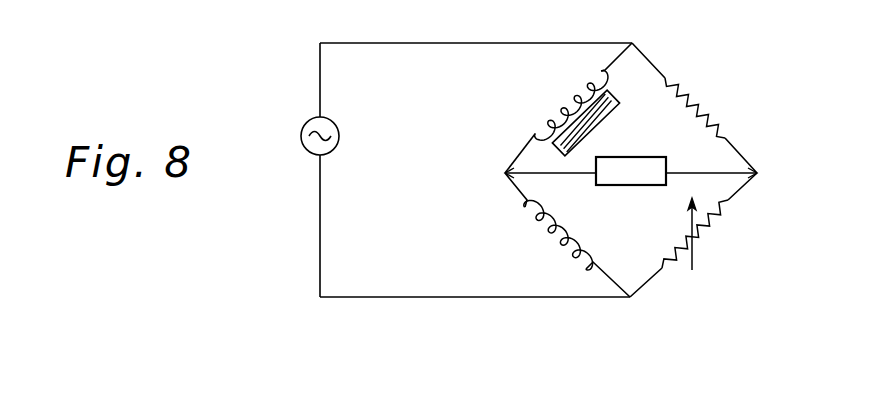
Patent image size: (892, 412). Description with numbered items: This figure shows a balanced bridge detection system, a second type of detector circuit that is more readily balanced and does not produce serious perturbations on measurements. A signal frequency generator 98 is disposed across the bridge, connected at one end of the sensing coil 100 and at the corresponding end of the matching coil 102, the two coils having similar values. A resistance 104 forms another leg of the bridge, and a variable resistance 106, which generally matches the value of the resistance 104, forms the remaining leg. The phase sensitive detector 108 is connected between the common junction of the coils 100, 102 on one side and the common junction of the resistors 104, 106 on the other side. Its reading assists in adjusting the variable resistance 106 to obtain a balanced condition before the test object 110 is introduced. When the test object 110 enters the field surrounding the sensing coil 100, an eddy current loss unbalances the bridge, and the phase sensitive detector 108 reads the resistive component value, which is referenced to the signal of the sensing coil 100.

The signal frequency generator 98 is at (307, 123).
The sensing coil 100 is at (568, 102).
The matching coil 102 is at (552, 235).
The resistance 104 is at (698, 108).
The variable resistance 106 is at (697, 237).
The phase sensitive detector 108 is at (641, 157).
The test object 110 is at (606, 102).